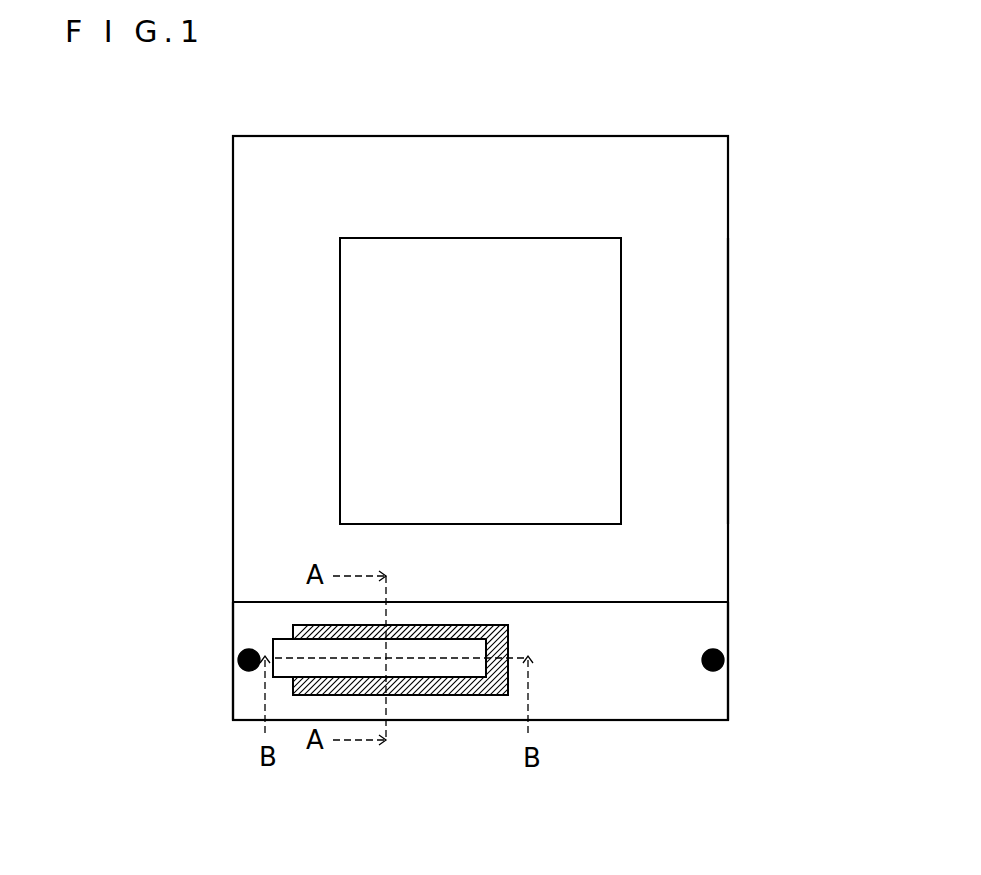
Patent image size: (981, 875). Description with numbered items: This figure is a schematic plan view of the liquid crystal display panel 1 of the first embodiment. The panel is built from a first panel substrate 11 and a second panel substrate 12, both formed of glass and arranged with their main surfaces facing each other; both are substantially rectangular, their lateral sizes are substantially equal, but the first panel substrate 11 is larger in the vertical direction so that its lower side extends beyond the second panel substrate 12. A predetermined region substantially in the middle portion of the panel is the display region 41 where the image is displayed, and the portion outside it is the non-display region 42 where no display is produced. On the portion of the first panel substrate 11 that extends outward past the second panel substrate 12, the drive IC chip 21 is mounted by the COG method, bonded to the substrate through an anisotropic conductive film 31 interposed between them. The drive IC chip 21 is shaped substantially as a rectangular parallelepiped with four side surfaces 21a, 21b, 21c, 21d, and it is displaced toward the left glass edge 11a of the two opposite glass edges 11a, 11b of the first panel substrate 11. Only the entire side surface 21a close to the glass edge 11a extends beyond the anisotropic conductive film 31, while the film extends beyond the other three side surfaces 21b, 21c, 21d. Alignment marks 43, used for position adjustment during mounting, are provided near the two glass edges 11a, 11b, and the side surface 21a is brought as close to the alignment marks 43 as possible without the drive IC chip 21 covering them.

The liquid crystal display panel 1 is at (795, 132).
The first panel substrate 11 is at (652, 722).
The glass edge 11a is at (233, 693).
The glass edge 11b is at (727, 693).
The second panel substrate 12 is at (728, 263).
The drive IC chip 21 is at (421, 665).
The side surface 21a is at (271, 644).
The side surface 21b is at (435, 628).
The side surface 21c is at (455, 695).
The side surface 21d is at (508, 641).
The anisotropic conductive film 31 is at (497, 695).
The display region 41 is at (372, 392).
The non-display region 42 is at (707, 392).
The alignment marks 43 is at (240, 652).